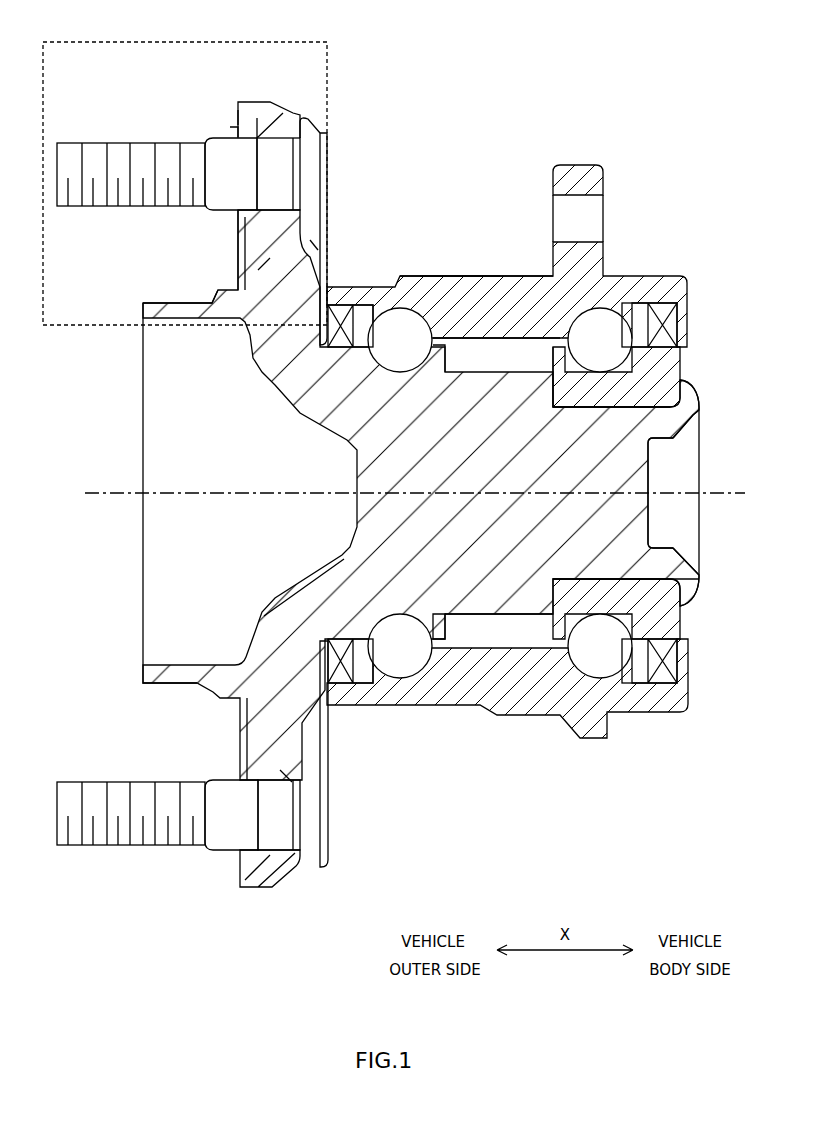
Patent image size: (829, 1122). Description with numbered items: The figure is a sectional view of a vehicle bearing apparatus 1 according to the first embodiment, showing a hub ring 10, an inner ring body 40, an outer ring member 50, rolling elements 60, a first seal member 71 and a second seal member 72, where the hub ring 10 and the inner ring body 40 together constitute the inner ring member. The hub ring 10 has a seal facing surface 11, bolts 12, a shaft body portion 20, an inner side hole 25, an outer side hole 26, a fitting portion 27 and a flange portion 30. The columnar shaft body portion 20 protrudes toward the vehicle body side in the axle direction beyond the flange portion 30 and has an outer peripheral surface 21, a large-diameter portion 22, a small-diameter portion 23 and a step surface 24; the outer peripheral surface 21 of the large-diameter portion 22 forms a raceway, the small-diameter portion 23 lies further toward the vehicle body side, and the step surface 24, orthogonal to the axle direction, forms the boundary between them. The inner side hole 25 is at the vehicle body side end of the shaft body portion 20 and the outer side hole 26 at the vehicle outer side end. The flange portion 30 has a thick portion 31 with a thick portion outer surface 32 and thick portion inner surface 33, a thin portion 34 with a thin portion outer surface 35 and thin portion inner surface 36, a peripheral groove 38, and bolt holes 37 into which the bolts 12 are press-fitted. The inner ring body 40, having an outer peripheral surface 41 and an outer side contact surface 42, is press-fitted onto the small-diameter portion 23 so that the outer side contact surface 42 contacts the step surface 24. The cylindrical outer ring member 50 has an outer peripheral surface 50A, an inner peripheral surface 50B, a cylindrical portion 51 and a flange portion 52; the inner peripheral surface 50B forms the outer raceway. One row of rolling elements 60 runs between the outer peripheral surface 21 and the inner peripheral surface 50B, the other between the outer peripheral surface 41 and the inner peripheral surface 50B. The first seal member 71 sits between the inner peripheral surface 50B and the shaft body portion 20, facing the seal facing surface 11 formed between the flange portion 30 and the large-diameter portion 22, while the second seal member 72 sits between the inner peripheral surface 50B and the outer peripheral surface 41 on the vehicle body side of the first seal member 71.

The vehicle bearing apparatus 1 is at (487, 44).
The hub ring 10 is at (701, 580).
The seal facing surface 11 is at (330, 694).
The bolts 12 is at (329, 170).
The shaft body portion 20 is at (700, 418).
The outer peripheral surface 21 is at (500, 618).
The large-diameter portion 22 is at (477, 598).
The small-diameter portion 23 is at (606, 569).
The step surface 24 is at (568, 582).
The inner side hole 25 is at (696, 543).
The outer side hole 26 is at (143, 666).
The fitting portion 27 is at (150, 302).
The flange portion 30 is at (251, 100).
The thick portion 31 is at (236, 118).
The thick portion outer surface 32 is at (229, 128).
The thick portion inner surface 33 is at (320, 124).
The thin portion 34 is at (238, 259).
The thin portion outer surface 35 is at (237, 229).
The thin portion inner surface 36 is at (318, 244).
The bolt holes 37 is at (265, 263).
The peripheral groove 38 is at (238, 773).
The inner ring body 40 is at (685, 353).
The outer peripheral surface 41 is at (553, 379).
The outer side contact surface 42 is at (561, 407).
The outer ring member 50 is at (591, 162).
The outer peripheral surface 50A is at (496, 273).
The inner peripheral surface 50B is at (466, 340).
The cylindrical portion 51 is at (453, 276).
The flange portion 52 is at (605, 181).
The rolling elements 60 is at (412, 292).
The first seal member 71 is at (345, 692).
The second seal member 72 is at (683, 660).